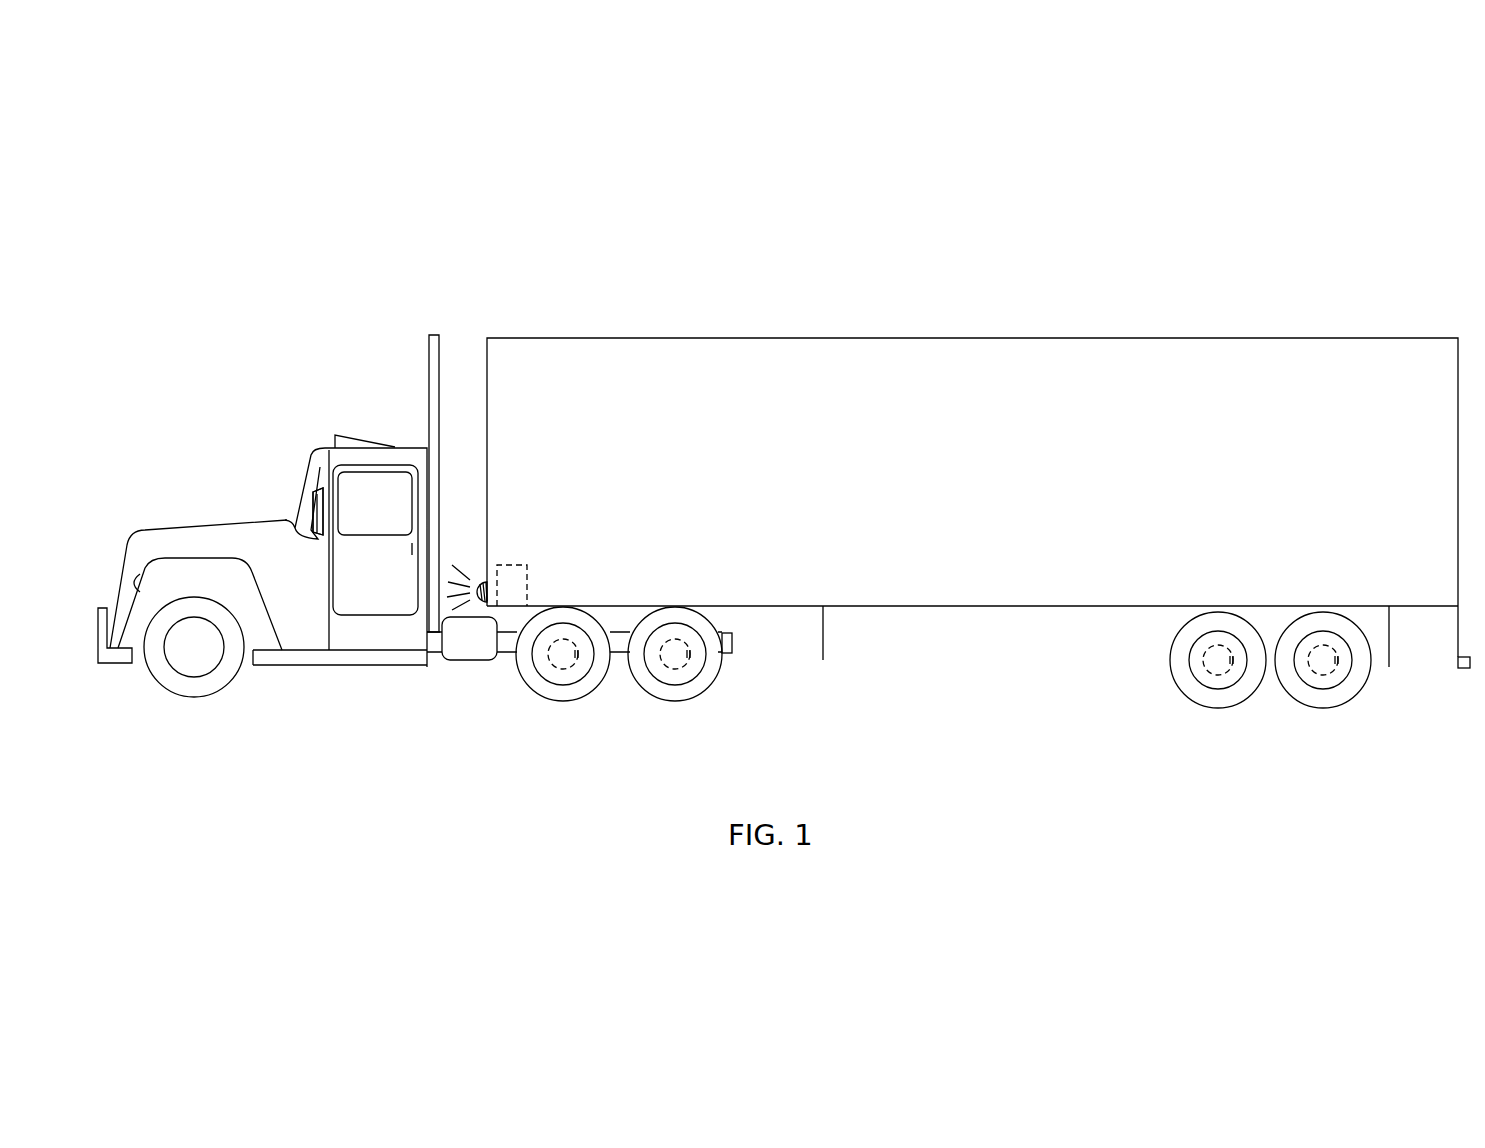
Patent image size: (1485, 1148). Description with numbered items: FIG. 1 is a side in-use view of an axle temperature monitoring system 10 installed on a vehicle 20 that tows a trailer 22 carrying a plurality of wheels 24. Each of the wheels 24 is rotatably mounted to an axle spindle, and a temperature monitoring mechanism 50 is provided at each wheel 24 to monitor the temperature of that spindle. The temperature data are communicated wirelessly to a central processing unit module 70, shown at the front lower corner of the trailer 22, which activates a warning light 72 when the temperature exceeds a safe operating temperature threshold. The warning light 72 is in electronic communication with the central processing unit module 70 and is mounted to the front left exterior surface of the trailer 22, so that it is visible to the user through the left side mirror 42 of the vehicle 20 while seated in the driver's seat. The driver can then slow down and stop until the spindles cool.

The axle temperature monitoring system 10 is at (463, 226).
The vehicle 20 is at (231, 543).
The trailer 22 is at (873, 390).
The wheels 24 is at (575, 685).
The left side mirror 42 is at (322, 495).
The temperature monitoring mechanism 50 is at (562, 658).
The central processing unit module 70 is at (523, 566).
The warning light 72 is at (470, 585).